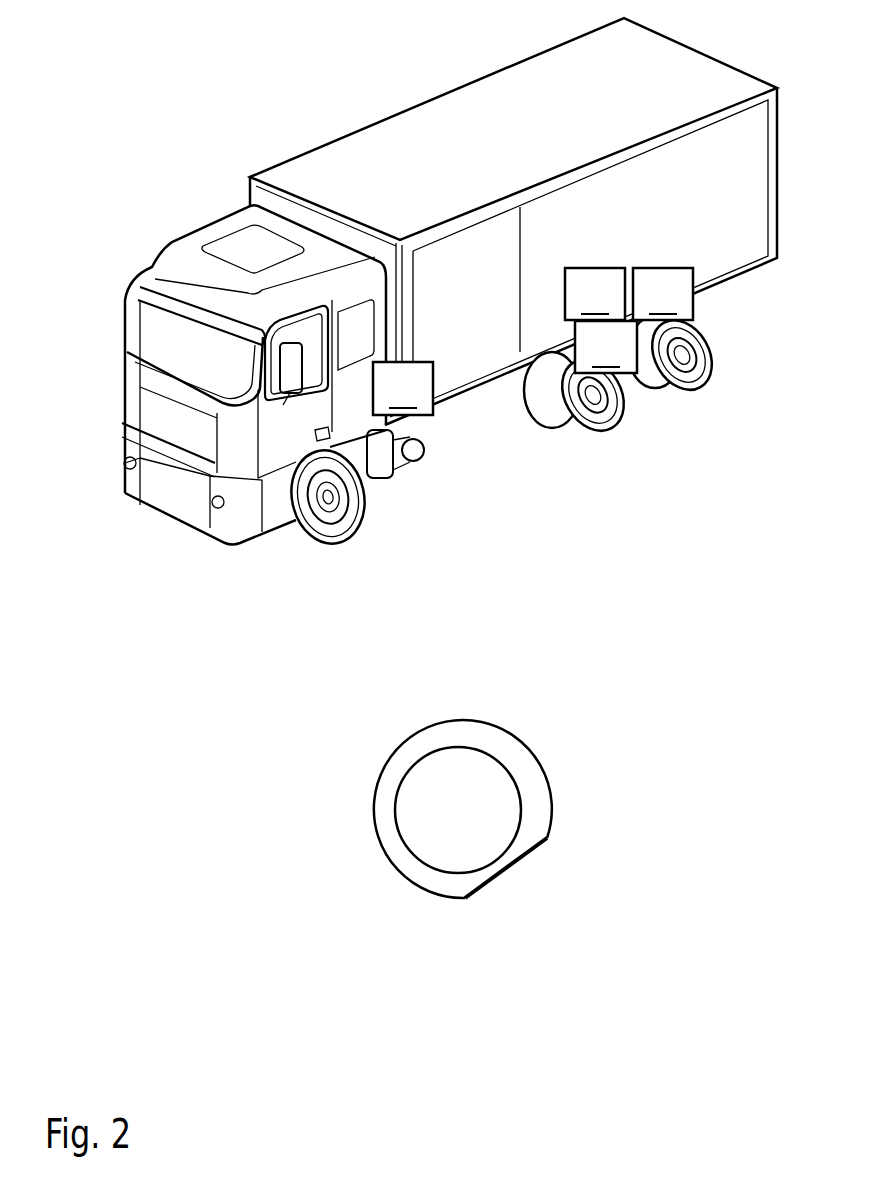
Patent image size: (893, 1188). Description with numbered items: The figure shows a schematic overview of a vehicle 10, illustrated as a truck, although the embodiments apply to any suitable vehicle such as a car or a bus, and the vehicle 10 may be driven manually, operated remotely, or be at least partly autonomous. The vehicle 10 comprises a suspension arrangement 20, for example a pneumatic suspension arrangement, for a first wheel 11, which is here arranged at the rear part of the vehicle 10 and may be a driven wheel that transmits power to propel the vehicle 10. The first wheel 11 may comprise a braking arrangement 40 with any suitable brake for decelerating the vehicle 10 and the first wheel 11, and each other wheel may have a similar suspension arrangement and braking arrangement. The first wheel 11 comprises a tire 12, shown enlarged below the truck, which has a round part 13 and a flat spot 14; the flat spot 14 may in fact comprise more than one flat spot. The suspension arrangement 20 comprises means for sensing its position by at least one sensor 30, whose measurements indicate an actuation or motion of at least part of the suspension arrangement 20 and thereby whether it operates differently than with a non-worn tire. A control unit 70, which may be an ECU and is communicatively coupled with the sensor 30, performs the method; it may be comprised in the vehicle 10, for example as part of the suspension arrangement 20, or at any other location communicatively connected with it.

The vehicle 10 is at (204, 143).
The first wheel 11 is at (670, 397).
The tire 12 is at (417, 753).
The round part 13 is at (547, 780).
The flat spot 14 is at (527, 857).
The suspension arrangement 20 is at (662, 153).
The sensor 30 is at (606, 347).
The braking arrangement 40 is at (590, 185).
The control unit 70 is at (403, 388).